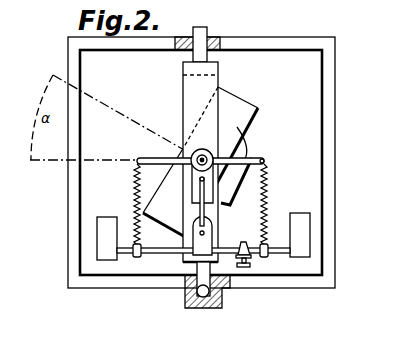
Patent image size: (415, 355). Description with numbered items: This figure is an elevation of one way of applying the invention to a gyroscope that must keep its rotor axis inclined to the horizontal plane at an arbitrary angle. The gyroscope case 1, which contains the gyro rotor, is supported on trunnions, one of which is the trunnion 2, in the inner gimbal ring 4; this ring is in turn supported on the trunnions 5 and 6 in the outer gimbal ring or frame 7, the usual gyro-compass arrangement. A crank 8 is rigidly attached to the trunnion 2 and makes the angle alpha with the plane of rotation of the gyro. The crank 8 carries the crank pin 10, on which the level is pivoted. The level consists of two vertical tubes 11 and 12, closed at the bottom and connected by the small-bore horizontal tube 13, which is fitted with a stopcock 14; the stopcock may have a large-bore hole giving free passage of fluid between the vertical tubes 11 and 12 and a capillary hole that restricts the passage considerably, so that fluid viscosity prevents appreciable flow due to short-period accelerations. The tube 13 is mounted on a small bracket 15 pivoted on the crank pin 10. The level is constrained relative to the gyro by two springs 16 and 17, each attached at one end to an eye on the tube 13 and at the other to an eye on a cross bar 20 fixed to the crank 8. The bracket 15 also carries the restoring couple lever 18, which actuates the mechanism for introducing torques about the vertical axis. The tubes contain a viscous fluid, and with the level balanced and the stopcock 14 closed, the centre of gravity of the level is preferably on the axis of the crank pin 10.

The gyroscope case 1 is at (258, 108).
The trunnion 2 is at (213, 158).
The inner gimbal ring 4 is at (193, 88).
The trunnion 5 is at (207, 32).
The trunnion 6 is at (223, 291).
The outer gimbal ring or frame 7 is at (287, 49).
The crank 8 is at (222, 174).
The crank pin 10 is at (205, 233).
The vertical tube 11 is at (112, 209).
The vertical tube 12 is at (296, 222).
The small-bore horizontal tube 13 is at (157, 251).
The stopcock 14 is at (252, 256).
The bracket 15 is at (199, 251).
The spring 16 is at (135, 192).
The spring 17 is at (266, 176).
The restoring couple lever 18 is at (200, 194).
The cross bar 20 is at (158, 162).